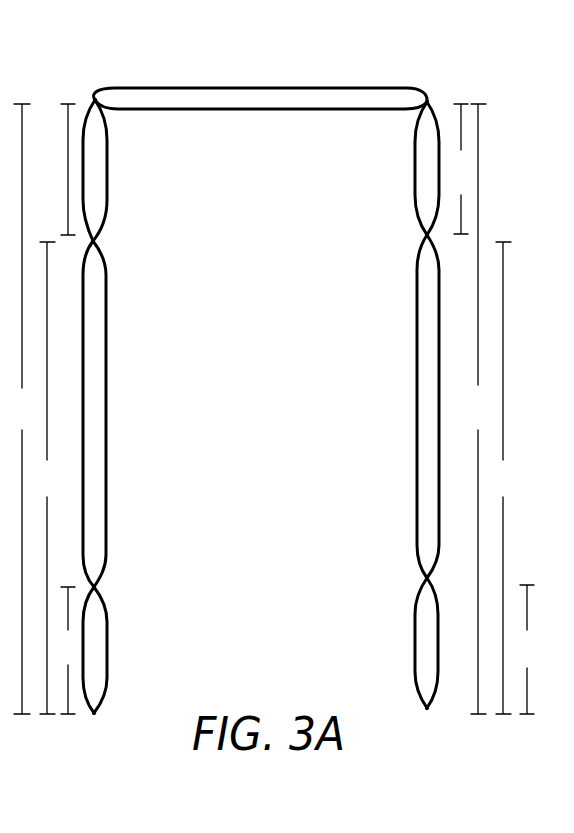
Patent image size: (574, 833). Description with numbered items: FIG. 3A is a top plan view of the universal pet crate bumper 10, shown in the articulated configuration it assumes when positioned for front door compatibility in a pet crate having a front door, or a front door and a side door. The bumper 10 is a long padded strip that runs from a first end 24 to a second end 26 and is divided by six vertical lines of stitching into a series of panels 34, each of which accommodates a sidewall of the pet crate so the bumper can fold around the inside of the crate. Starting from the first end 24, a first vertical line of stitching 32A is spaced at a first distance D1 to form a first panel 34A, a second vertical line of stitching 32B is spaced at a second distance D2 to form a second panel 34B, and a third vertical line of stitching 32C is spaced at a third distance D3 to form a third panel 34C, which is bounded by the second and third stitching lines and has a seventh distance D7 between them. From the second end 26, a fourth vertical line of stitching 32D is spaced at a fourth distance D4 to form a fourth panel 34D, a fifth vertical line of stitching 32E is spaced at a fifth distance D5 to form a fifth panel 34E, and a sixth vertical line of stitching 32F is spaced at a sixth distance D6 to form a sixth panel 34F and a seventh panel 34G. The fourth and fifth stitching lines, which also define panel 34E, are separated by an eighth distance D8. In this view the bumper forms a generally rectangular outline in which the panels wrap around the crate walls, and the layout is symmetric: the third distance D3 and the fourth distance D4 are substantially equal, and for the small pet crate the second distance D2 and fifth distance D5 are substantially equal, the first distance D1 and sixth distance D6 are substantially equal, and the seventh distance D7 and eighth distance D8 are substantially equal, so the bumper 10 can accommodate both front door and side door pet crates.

The bumper 10 is at (174, 47).
The first end 24 is at (94, 713).
The second end 26 is at (427, 708).
The first vertical line of stitching 32A is at (94, 587).
The second vertical line of stitching 32B is at (93, 241).
The third vertical line of stitching 32C is at (95, 100).
The fourth vertical line of stitching 32D is at (427, 102).
The fifth vertical line of stitching 32E is at (427, 235).
The sixth vertical line of stitching 32F is at (427, 578).
The panel 34 is at (261, 400).
The first panel 34A is at (107, 645).
The second panel 34B is at (106, 396).
The third panel 34C is at (107, 170).
The fourth panel 34D is at (268, 110).
The fifth panel 34E is at (415, 178).
The sixth panel 34F is at (417, 400).
The seventh panel 34G is at (415, 643).
The first distance D1 is at (65, 650).
The second distance D2 is at (50, 478).
The third distance D3 is at (20, 409).
The fourth distance D4 is at (477, 409).
The fifth distance D5 is at (507, 478).
The sixth distance D6 is at (525, 649).
The seventh distance D7 is at (65, 169).
The eighth distance D8 is at (458, 169).